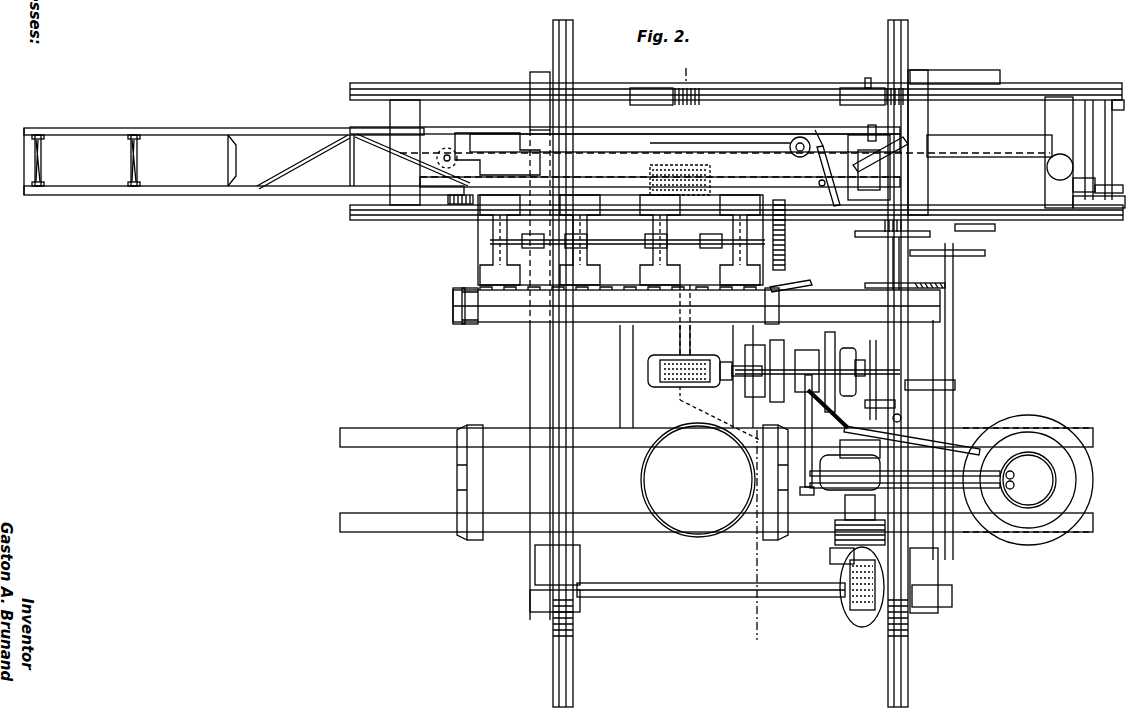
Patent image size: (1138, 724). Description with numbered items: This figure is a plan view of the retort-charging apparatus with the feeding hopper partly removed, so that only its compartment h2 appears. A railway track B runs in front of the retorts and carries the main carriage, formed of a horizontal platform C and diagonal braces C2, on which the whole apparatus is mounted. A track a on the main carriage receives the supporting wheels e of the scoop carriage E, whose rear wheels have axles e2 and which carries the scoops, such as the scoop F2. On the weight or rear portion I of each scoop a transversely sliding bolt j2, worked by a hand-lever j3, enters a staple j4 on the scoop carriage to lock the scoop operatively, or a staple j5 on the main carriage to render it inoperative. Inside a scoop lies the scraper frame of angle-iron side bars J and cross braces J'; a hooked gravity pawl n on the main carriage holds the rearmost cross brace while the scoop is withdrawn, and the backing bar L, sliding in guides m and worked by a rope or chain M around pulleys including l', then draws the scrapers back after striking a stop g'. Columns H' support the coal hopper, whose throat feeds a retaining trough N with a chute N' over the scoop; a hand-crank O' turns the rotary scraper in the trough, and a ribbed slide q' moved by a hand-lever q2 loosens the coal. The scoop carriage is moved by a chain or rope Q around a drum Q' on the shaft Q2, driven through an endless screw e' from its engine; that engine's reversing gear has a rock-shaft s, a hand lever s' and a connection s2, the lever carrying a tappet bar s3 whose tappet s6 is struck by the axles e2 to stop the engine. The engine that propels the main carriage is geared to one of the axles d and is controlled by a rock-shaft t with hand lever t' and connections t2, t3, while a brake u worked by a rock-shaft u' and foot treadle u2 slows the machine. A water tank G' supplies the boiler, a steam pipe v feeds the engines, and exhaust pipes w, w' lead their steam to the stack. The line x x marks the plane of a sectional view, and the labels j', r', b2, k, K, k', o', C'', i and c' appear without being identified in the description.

The railway track B is at (726, 363).
The scoop carriage track a is at (736, 146).
The horizontal platform C is at (716, 343).
The side bars J is at (244, 153).
The cross braces J' is at (374, 144).
The transversely sliding bolt j2 is at (425, 144).
The hand-lever j3 is at (562, 153).
The bracket j' is at (497, 152).
The pivot r' is at (431, 160).
The hooked gravity pawl n is at (451, 196).
The scoop carriage E is at (625, 122).
The scoop F2 is at (685, 144).
The guides m is at (720, 135).
The wire rope or chain M is at (725, 156).
The chute N' is at (660, 184).
The drum Q' is at (697, 180).
The roller b2 is at (800, 133).
The pulley l' is at (819, 127).
The staple j4 is at (885, 124).
The weight I is at (869, 167).
The pin k is at (837, 173).
The lever K is at (828, 177).
The supporting wheels e is at (766, 159).
The axles e2 is at (865, 72).
The diagonal braces C2 is at (955, 150).
The backing bar L is at (990, 142).
The stop g' is at (1079, 150).
The staple j5 is at (1084, 176).
The bracket C'' is at (1101, 154).
The pin i is at (1126, 215).
The horizontal tappet bar s3 is at (1050, 222).
The tappet s6 is at (1088, 222).
The retaining trough N is at (620, 240).
The chain or wire rope Q is at (627, 231).
The collar k' is at (533, 230).
The hanger o' is at (579, 206).
The hand-crank O' is at (727, 241).
The hopper compartment h2 is at (696, 304).
The horizontal bar or slide q' is at (451, 298).
The hand-lever q2 is at (800, 286).
The columns H' is at (626, 414).
The horizontal shaft Q2 is at (690, 338).
The endless screw e' is at (702, 413).
The rock-shaft u' is at (874, 371).
The connection s2 is at (887, 350).
The rock-shaft s is at (897, 336).
The hand lever s' is at (891, 260).
The hand lever t' is at (925, 334).
The foot treadle u2 is at (946, 285).
The rock-shaft t is at (947, 401).
The connection t2 is at (930, 377).
The connection t3 is at (896, 408).
The brake u is at (827, 469).
The steam pipe v is at (894, 422).
The exhaust pipe w is at (905, 466).
The exhaust pipe w' is at (905, 483).
The water tank G' is at (867, 480).
The axle d is at (711, 581).
The gear c' is at (838, 618).
The section line x is at (719, 354).